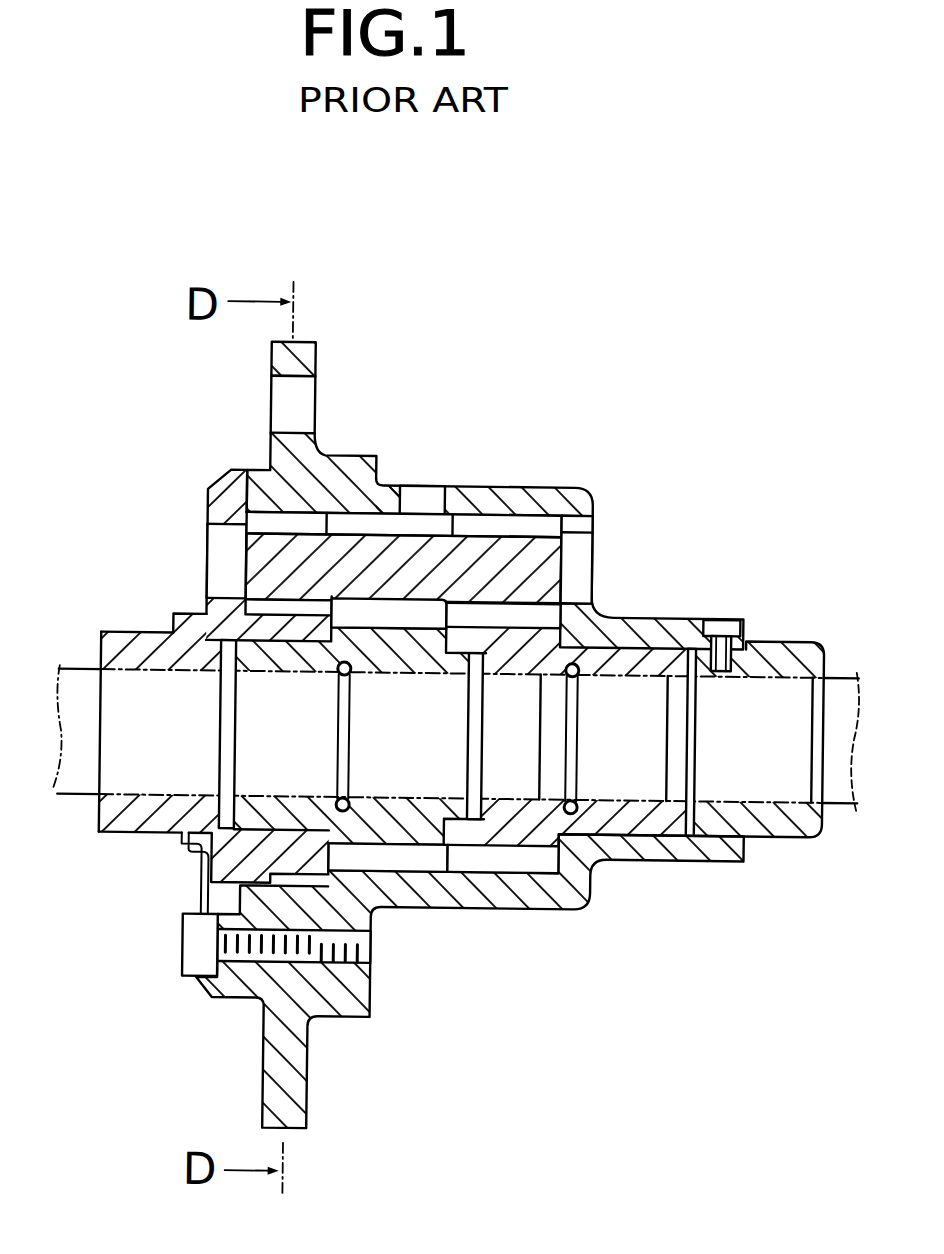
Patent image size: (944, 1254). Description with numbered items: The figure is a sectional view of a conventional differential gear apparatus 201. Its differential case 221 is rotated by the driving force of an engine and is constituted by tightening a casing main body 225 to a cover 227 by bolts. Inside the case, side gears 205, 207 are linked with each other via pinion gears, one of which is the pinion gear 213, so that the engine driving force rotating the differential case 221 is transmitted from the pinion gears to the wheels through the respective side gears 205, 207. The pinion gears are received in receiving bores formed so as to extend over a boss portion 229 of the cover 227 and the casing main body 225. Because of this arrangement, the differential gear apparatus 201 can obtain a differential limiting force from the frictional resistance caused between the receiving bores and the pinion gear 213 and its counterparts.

The differential gear apparatus 201 is at (518, 463).
The side gear 205 is at (415, 858).
The side gear 207 is at (511, 857).
The pinion gear 213 is at (571, 522).
The differential case 221 is at (258, 470).
The casing main body 225 is at (349, 457).
The cover 227 is at (197, 511).
The boss portion 229 is at (289, 634).